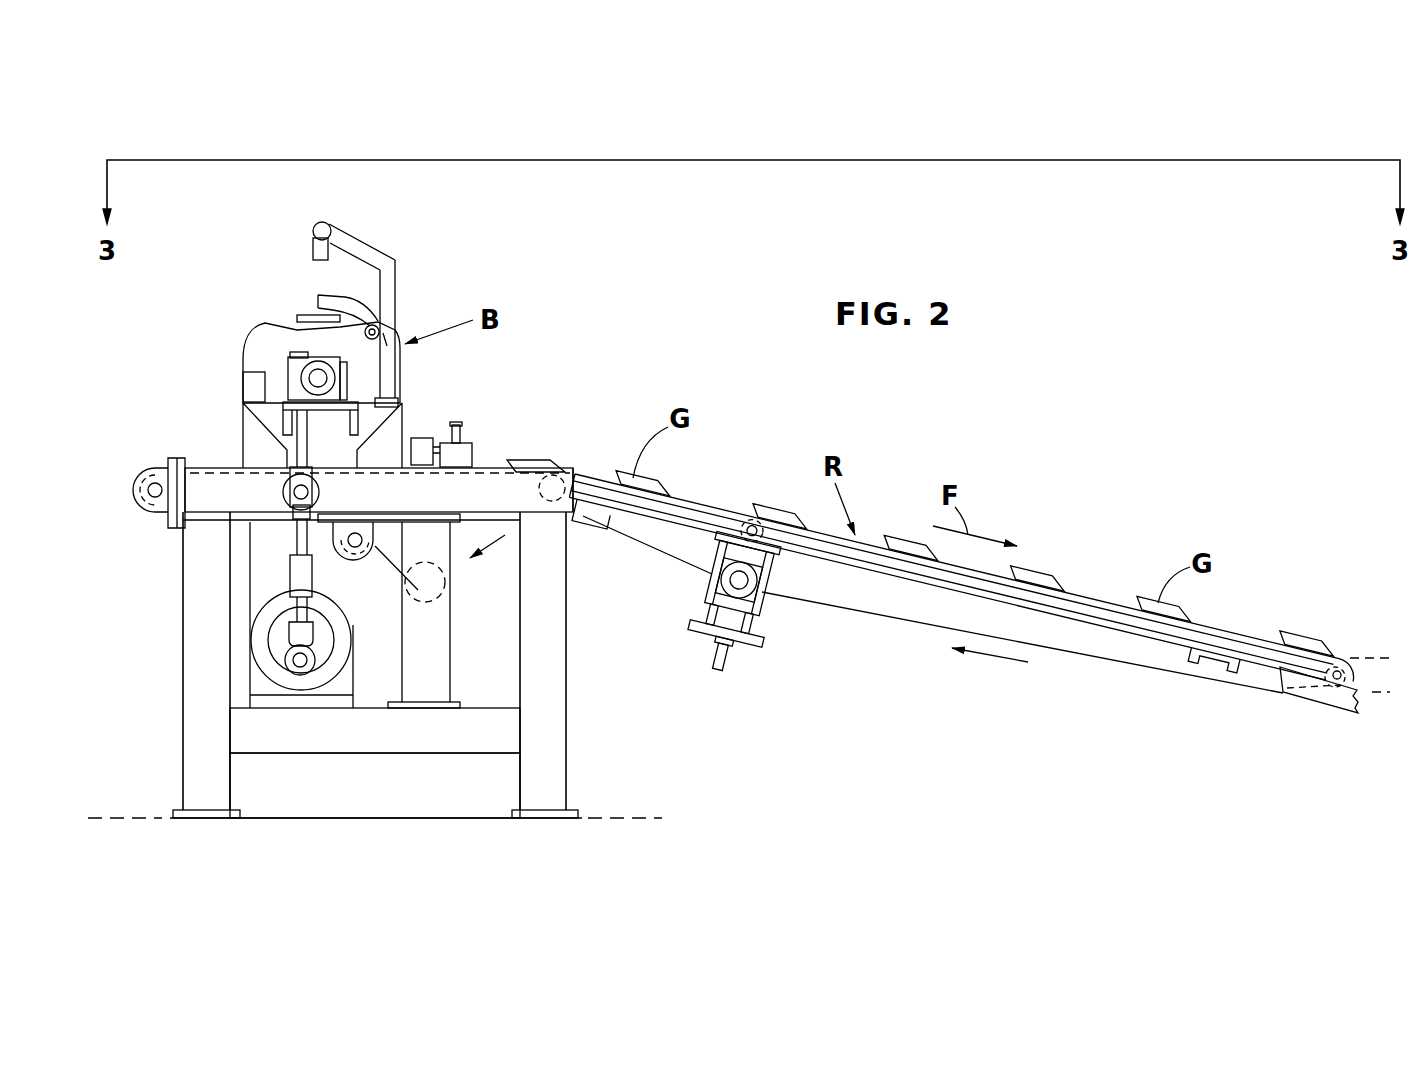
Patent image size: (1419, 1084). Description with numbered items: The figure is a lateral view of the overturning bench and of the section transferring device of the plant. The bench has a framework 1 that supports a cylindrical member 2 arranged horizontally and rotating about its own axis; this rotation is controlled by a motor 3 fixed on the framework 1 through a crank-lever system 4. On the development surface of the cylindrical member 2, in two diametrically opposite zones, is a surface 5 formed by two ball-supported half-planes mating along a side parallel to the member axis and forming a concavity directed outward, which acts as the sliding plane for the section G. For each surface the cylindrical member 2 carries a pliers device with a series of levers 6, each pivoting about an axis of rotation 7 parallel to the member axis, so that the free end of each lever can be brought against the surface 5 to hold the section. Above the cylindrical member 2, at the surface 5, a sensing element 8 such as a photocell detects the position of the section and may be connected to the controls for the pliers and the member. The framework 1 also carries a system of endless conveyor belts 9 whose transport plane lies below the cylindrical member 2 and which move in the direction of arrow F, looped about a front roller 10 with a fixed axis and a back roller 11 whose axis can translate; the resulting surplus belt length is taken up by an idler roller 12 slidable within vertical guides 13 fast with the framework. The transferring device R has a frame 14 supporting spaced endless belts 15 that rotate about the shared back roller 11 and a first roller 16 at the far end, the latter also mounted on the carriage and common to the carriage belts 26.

The framework 1 is at (190, 617).
The cylindrical member 2 is at (255, 347).
The motor 3 is at (340, 650).
The crank-lever system 4 is at (290, 568).
The surface 5 is at (289, 316).
The levers 6 is at (340, 300).
The axis of rotation 7 is at (380, 328).
The sensing element 8 is at (313, 248).
The conveyor belts 9 is at (481, 467).
The front roller 10 is at (155, 470).
The back roller 11 is at (575, 470).
The idler roller 12 is at (557, 510).
The vertical guides 13 is at (438, 652).
The frame 14 is at (1092, 608).
The endless belts 15 is at (708, 505).
The first roller 16 is at (1345, 660).
The belts 26 is at (1373, 697).